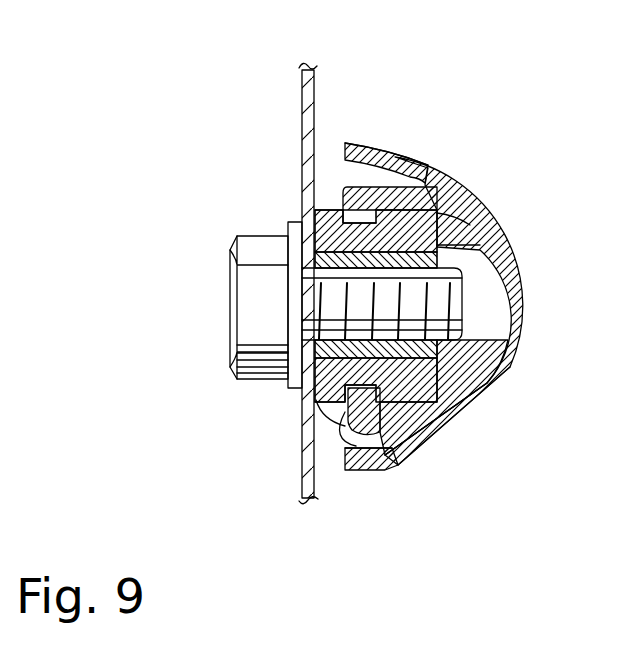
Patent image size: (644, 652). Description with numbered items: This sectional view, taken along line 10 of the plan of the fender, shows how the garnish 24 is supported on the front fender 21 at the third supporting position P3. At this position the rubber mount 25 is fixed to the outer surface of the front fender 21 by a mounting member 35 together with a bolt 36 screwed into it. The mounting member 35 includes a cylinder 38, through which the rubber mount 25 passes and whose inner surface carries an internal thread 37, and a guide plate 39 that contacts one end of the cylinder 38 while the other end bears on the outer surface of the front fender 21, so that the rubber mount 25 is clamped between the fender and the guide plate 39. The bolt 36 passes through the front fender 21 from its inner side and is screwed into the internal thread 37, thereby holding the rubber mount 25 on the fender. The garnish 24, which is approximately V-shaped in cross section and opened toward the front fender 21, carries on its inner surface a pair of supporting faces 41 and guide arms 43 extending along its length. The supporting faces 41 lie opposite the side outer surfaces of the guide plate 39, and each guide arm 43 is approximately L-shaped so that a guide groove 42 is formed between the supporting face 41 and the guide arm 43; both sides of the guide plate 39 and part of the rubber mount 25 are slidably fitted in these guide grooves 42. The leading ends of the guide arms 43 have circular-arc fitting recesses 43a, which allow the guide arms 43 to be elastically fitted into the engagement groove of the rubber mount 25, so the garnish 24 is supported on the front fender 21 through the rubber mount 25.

The section line 10 is at (388, 21).
The front fender 21 is at (303, 97).
The garnish 24 is at (523, 303).
The rubber mount 25 is at (407, 403).
The mounting member 35 is at (452, 358).
The bolt 36 is at (243, 333).
The internal thread 37 is at (310, 283).
The cylinder 38 is at (303, 395).
The guide plate 39 is at (440, 215).
The supporting face 41 is at (440, 246).
The guide groove 42 is at (420, 207).
The guide arm 43 is at (360, 187).
The fitting recess 43a is at (315, 212).
The third supporting position P3 is at (463, 178).